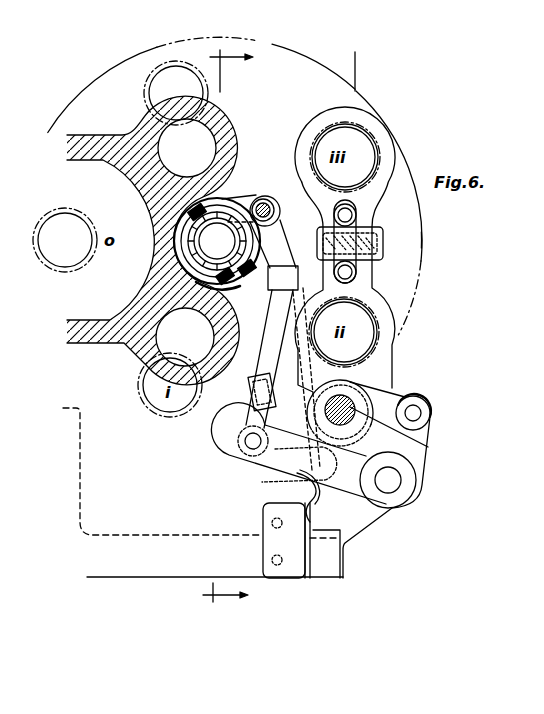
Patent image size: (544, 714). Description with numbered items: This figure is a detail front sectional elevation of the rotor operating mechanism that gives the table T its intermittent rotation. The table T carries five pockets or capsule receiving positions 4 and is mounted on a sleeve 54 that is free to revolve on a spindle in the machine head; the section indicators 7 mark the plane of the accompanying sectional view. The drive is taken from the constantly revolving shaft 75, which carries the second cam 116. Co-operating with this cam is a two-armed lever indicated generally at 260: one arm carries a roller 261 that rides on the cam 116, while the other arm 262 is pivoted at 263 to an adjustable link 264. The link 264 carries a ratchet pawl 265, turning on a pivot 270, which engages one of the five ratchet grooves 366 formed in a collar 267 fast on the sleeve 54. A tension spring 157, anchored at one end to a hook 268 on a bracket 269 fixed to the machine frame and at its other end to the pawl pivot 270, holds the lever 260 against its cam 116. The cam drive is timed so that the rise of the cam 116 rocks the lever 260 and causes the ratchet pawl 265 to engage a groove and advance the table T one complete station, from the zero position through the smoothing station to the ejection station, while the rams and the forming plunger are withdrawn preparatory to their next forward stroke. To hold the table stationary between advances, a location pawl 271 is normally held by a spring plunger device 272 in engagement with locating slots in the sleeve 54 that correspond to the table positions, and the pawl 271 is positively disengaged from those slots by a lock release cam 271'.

The pocket 4 is at (145, 80).
The section line 7- 7 is at (222, 325).
The table T is at (424, 234).
The sleeve 54 is at (188, 243).
The shaft 75 is at (425, 449).
The second cam 116 is at (398, 397).
The tension spring 157 is at (275, 305).
The two-armed lever 260 is at (420, 463).
The roller 261 is at (428, 407).
The lever arm 262 is at (346, 483).
The pivot 263 is at (247, 447).
The adjustable link 264 is at (277, 353).
The ratchet pawl 265 is at (250, 199).
The collar 267 is at (222, 283).
The hook 268 is at (302, 508).
The bracket 269 is at (293, 550).
The pivot 270 is at (280, 208).
The location pawl 271 is at (363, 242).
The lock release cam 271' is at (340, 401).
The spring plunger device 272 is at (284, 249).
The clutch member 366 is at (188, 260).